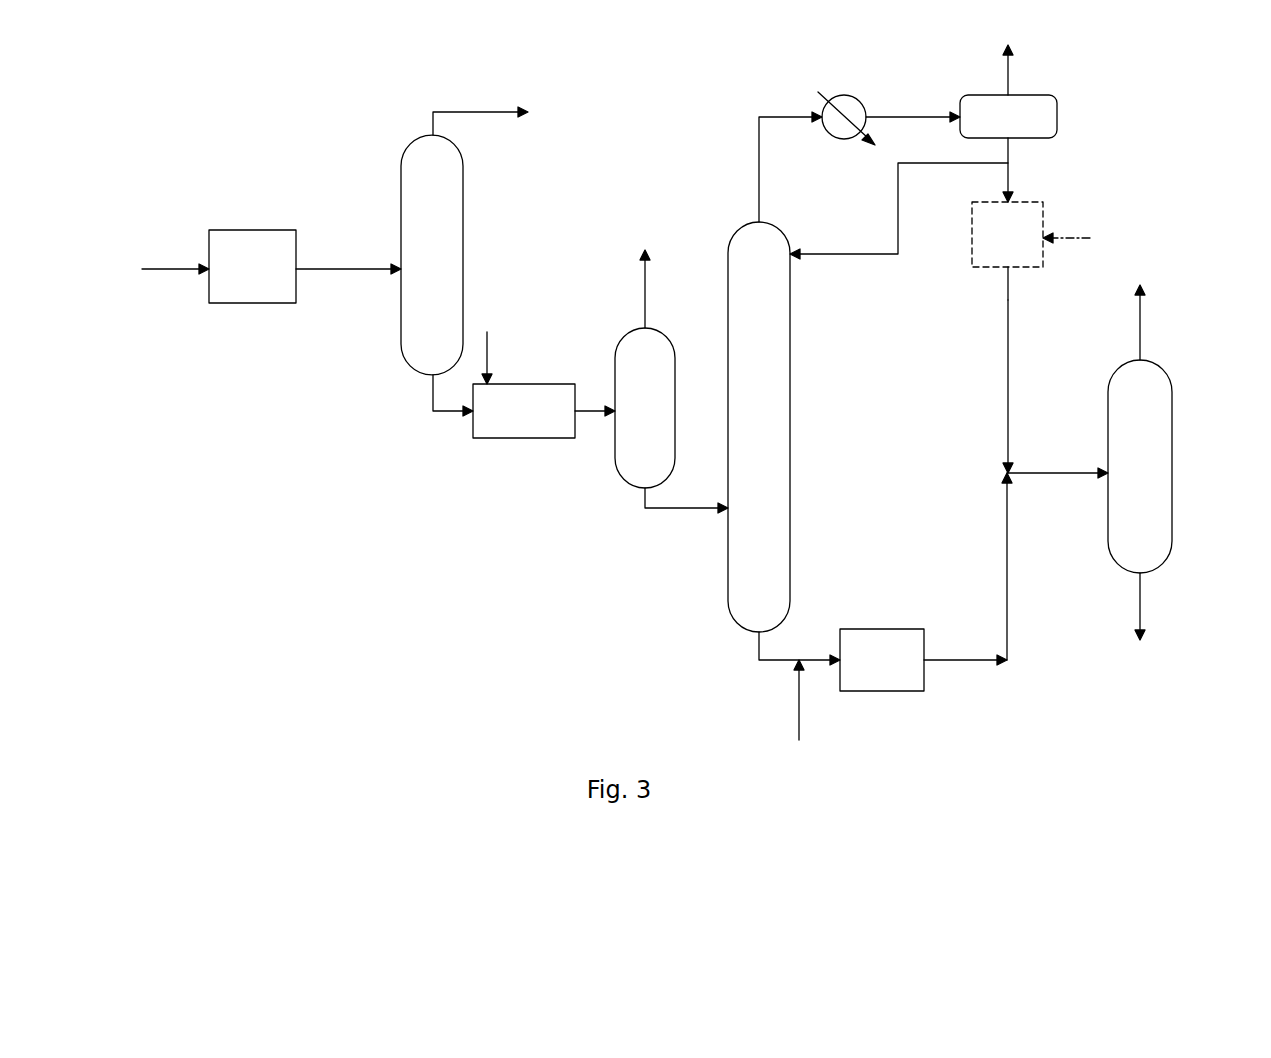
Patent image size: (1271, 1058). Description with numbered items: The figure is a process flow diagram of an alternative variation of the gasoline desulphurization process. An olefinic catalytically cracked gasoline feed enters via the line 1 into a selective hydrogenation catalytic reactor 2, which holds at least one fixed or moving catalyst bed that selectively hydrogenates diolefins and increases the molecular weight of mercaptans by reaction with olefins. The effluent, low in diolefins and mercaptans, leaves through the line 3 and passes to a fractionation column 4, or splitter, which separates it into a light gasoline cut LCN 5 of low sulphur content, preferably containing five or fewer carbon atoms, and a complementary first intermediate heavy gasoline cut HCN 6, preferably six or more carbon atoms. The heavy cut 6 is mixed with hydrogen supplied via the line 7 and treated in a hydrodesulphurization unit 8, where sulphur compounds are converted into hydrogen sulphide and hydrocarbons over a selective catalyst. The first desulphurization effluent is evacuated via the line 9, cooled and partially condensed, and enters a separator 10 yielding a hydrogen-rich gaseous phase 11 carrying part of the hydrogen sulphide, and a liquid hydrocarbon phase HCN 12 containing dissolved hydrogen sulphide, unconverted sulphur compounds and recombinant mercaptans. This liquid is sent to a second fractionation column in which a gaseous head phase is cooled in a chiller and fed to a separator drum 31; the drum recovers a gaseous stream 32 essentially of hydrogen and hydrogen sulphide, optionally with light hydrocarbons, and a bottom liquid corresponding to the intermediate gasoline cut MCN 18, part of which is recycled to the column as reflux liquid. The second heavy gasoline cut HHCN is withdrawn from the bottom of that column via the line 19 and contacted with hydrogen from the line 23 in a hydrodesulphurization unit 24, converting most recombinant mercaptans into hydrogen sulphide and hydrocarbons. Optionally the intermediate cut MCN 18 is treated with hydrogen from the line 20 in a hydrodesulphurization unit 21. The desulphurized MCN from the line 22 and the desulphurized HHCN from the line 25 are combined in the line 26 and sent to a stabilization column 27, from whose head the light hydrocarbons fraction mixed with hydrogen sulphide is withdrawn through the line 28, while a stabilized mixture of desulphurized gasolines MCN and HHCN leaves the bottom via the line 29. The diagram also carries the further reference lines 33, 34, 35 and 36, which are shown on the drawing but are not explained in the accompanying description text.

The line 1 is at (170, 269).
The selective hydrogenation catalytic reactor 2 is at (262, 230).
The line 3 is at (340, 269).
The fractionation column 4 is at (463, 200).
The light gasoline cut LCN 5 is at (476, 112).
The first intermediate heavy gasoline cut HCN 6 is at (442, 411).
The line 7 is at (487, 352).
The hydrodesulphurization unit 8 is at (525, 438).
The line 9 is at (590, 411).
The separator 10 is at (615, 358).
The gaseous phase 11 is at (645, 290).
The liquid hydrocarbon phase HCN 12 is at (672, 508).
The intermediate gasoline cut MCN 18 is at (1008, 160).
The line 19 is at (769, 660).
The line 20 is at (1080, 238).
The hydrodesulphurization unit 21 is at (972, 262).
The line 22 is at (1008, 378).
The line 23 is at (799, 700).
The hydrodesulphurization unit 24 is at (880, 629).
The line 25 is at (1007, 590).
The line 26 is at (1060, 473).
The stabilization column 27 is at (1172, 463).
The line 28 is at (1140, 330).
The line 29 is at (1140, 600).
The separator drum 31 is at (790, 433).
The gaseous stream 32 is at (759, 192).
The condenser 33 is at (858, 101).
The reflux drum 34 is at (1057, 116).
The vent stream 35 is at (1008, 75).
The reflux stream 36 is at (898, 200).